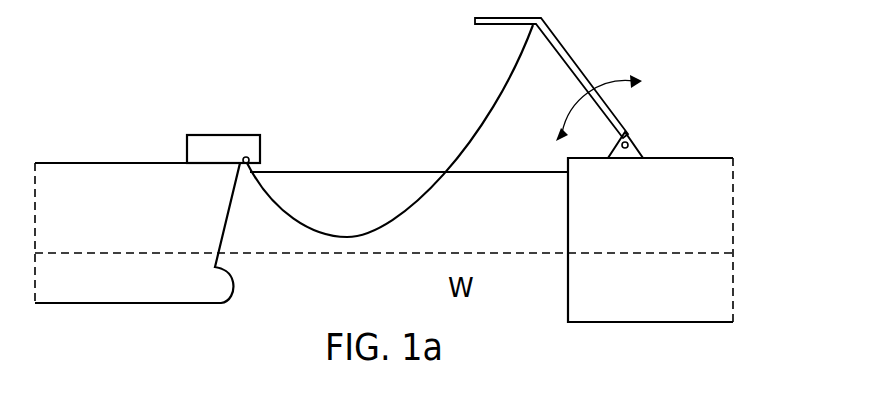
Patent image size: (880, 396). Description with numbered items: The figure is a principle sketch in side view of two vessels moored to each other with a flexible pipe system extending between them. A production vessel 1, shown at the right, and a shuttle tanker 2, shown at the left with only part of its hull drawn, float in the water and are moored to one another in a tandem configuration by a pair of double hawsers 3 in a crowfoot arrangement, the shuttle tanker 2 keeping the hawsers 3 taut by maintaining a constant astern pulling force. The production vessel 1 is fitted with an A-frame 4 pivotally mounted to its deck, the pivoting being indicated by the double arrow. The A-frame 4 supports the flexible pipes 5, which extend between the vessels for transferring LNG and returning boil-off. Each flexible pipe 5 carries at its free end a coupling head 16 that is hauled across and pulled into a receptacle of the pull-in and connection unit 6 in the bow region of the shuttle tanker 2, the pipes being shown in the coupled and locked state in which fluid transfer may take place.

The production vessel 1 is at (699, 219).
The shuttle tanker 2 is at (134, 229).
The double hawsers 3 is at (336, 172).
The A-frame 4 is at (578, 72).
The flexible pipes 5 is at (487, 118).
The pull-in and connection unit 6 is at (223, 135).
The coupling head 16 is at (249, 158).